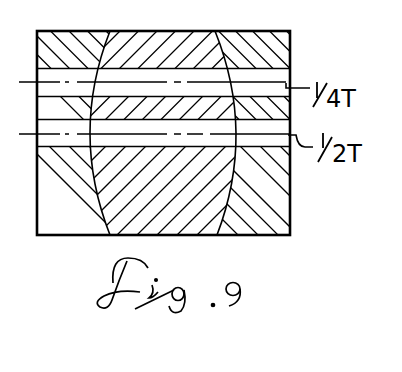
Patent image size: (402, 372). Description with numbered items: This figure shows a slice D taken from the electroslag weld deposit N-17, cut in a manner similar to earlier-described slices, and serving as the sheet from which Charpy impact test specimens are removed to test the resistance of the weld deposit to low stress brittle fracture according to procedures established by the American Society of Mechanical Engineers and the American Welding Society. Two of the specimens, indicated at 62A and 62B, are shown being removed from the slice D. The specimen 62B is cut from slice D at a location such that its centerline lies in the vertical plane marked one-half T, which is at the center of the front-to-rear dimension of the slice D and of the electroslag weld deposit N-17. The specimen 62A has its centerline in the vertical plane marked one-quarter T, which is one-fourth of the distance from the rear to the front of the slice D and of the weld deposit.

The electroslag weld deposit N- 17 is at (110, 211).
The Charpy impact test specimen 62A is at (201, 69).
The Charpy impact test specimen 62B is at (176, 145).
The slice D is at (72, 235).